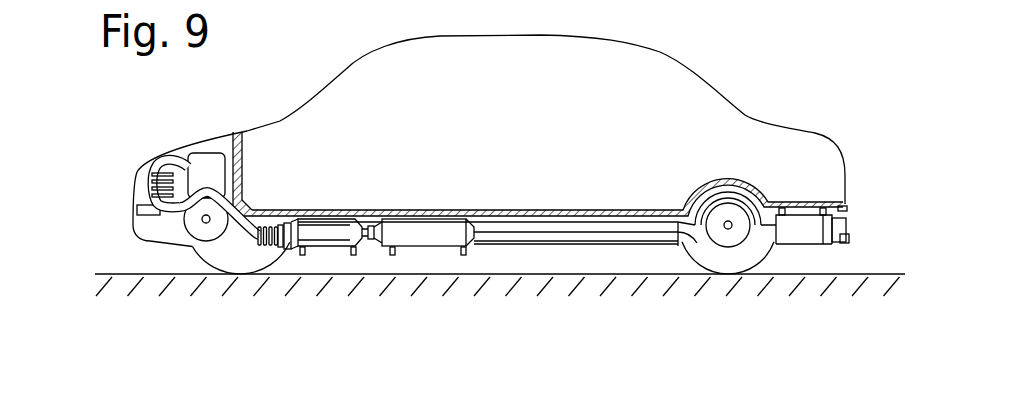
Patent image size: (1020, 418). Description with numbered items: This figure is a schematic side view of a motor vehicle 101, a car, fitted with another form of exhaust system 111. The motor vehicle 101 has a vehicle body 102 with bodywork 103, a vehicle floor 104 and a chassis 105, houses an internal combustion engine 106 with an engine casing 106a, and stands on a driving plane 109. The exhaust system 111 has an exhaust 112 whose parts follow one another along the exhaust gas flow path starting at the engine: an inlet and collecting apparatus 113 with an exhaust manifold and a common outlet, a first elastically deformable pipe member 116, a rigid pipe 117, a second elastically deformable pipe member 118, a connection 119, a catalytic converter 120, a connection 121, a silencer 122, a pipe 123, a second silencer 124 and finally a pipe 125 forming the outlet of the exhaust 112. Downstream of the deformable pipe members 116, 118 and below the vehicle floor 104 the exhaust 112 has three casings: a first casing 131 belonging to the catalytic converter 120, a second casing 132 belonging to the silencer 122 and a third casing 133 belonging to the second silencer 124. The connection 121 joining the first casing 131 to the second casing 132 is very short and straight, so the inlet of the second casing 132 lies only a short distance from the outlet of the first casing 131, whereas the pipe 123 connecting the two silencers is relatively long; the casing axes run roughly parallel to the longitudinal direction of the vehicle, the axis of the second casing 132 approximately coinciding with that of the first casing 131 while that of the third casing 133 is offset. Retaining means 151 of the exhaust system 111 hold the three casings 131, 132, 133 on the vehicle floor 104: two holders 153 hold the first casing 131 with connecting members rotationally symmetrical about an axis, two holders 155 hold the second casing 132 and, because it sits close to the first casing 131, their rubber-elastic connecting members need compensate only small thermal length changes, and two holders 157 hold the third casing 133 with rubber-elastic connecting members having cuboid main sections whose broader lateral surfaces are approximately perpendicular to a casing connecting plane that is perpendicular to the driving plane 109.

The motor vehicle 101 is at (126, 179).
The vehicle body 102 is at (125, 202).
The bodywork 103 is at (347, 70).
The vehicle floor 104 is at (577, 211).
The chassis 105 is at (129, 218).
The internal combustion engine 106 is at (204, 148).
The engine casing 106a is at (224, 152).
The driving plane 109 is at (147, 273).
The exhaust system 111 is at (156, 149).
The exhaust 112 is at (244, 251).
The inlet and collecting apparatus 113 is at (178, 152).
The first elastically deformable pipe member 116 is at (151, 170).
The rigid pipe 117 is at (177, 218).
The second elastically deformable pipe member 118 is at (276, 250).
The connection 119 is at (292, 250).
The catalytic converter 120 is at (331, 248).
The connection 121 is at (378, 248).
The silencer 122 is at (446, 248).
The pipe 123 is at (590, 246).
The second silencer 124 is at (811, 245).
The pipe 125 is at (843, 244).
The first casing 131 is at (336, 228).
The second casing 132 is at (444, 228).
The third casing 133 is at (809, 214).
The retaining means 151 is at (845, 208).
The holders 153 is at (303, 256).
The holders 155 is at (394, 256).
The holders 157 is at (790, 246).